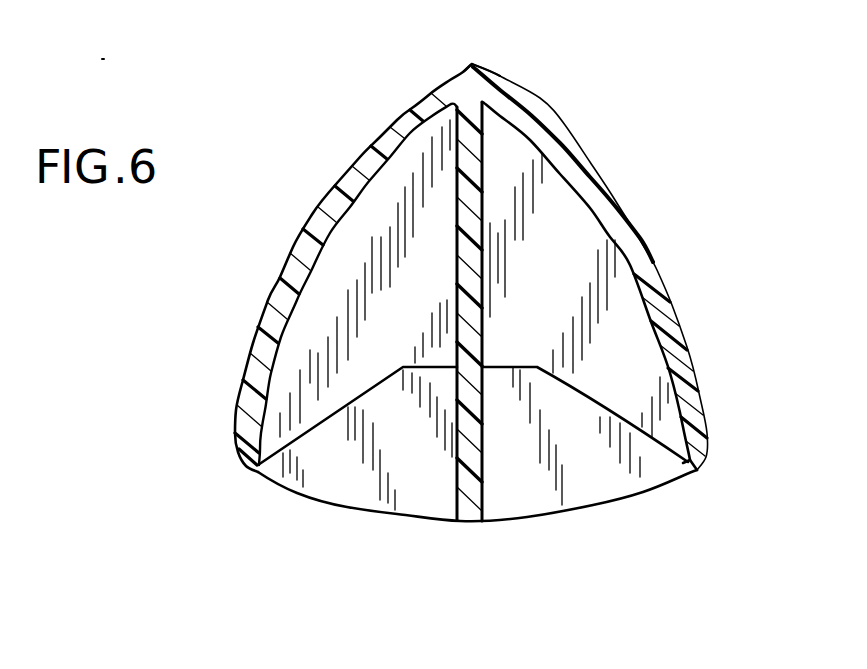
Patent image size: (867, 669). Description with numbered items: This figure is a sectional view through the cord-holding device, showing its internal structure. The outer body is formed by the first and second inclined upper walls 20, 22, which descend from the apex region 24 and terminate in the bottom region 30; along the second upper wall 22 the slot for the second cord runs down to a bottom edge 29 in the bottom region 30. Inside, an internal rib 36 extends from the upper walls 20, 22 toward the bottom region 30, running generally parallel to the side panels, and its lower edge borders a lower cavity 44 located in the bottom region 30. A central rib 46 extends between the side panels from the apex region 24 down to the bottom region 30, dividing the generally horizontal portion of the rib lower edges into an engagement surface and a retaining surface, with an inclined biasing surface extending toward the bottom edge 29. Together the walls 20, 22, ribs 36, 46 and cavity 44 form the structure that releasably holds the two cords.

The first inclined upper wall 20 is at (294, 254).
The second inclined upper wall 22 is at (553, 144).
The apex region 24 is at (474, 66).
The internal rib 36 is at (577, 237).
The central rib 46 is at (462, 490).
The lower cavity 44 is at (340, 487).
The bottom region 30 is at (620, 502).
The bottom edge 29 is at (693, 468).